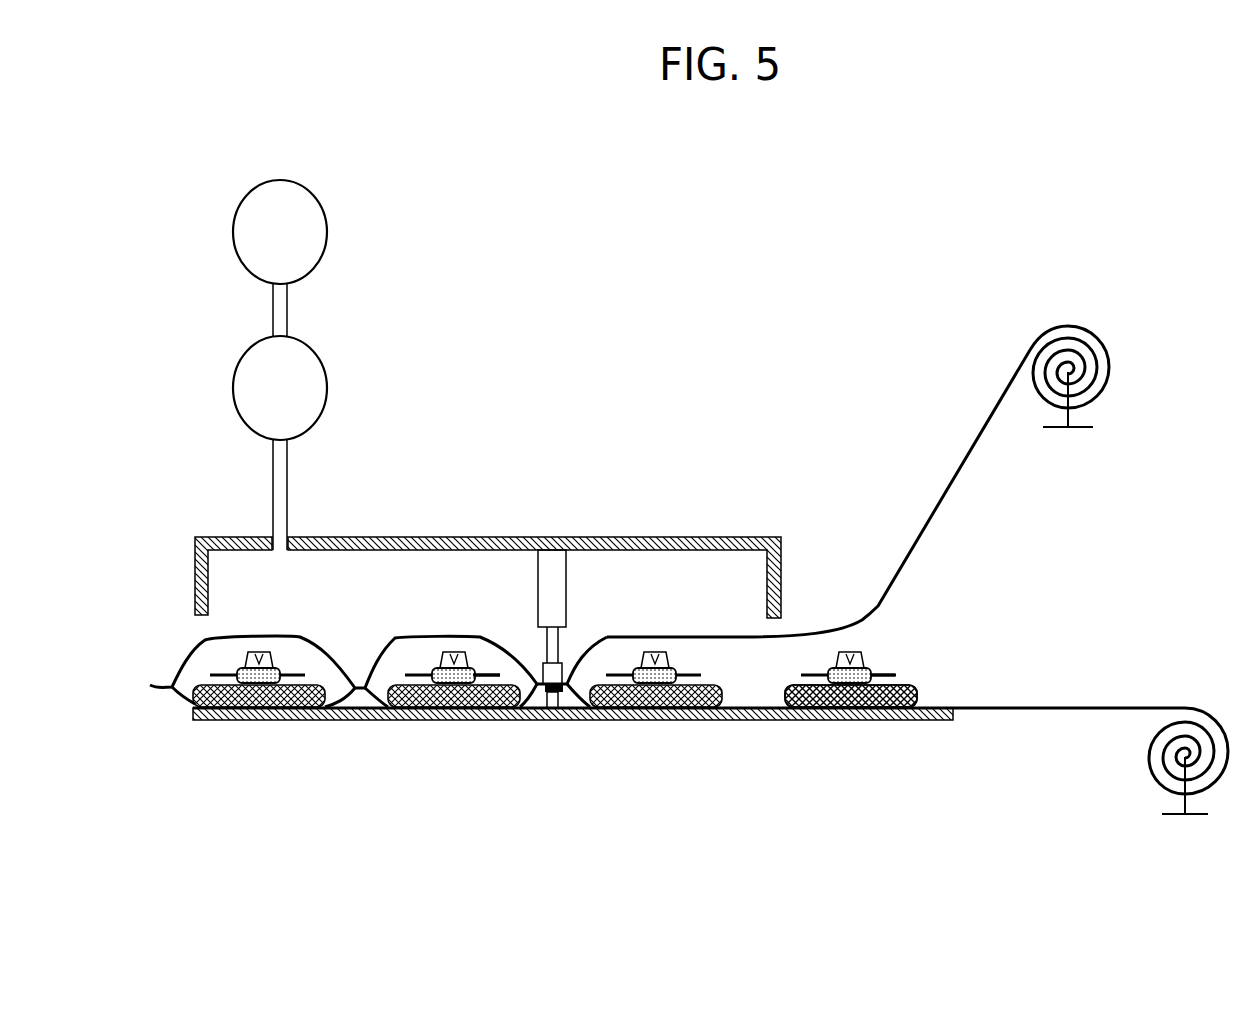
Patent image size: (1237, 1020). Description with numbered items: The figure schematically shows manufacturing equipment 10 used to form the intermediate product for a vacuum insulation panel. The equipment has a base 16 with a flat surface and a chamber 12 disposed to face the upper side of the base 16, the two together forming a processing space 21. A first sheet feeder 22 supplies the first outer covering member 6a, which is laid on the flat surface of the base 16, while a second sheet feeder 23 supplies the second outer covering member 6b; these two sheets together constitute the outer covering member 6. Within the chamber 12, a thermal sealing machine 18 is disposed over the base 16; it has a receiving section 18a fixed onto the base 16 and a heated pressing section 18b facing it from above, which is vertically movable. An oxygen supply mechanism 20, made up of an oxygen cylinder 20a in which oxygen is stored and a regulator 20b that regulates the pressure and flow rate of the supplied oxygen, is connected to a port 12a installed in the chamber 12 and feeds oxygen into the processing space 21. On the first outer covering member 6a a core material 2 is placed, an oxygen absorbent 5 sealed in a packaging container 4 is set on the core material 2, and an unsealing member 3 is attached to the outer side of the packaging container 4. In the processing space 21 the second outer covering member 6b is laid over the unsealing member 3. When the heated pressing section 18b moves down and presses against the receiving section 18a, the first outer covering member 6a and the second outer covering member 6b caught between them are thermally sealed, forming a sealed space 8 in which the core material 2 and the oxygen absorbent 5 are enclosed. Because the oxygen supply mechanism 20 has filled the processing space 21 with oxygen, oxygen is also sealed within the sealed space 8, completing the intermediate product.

The core material 2 is at (400, 690).
The unsealing member 3 is at (441, 657).
The packaging container 4 is at (492, 676).
The oxygen absorbent 5 is at (466, 675).
The outer covering member 6 is at (710, 560).
The first outer covering member 6a is at (1148, 707).
The second outer covering member 6b is at (965, 465).
The sealed space 8 is at (390, 653).
The manufacturing equipment 10 is at (534, 314).
The chamber 12 is at (446, 536).
The port 12a is at (270, 497).
The base 16 is at (428, 721).
The thermal sealing machine 18 is at (536, 666).
The receiving section 18a is at (557, 720).
The pressing section 18b is at (558, 668).
The oxygen supply mechanism 20 is at (314, 310).
The oxygen cylinder 20a is at (327, 229).
The regulator 20b is at (327, 387).
The processing space 21 is at (383, 590).
The first sheet feeder 22 is at (1162, 812).
The second sheet feeder 23 is at (1080, 430).